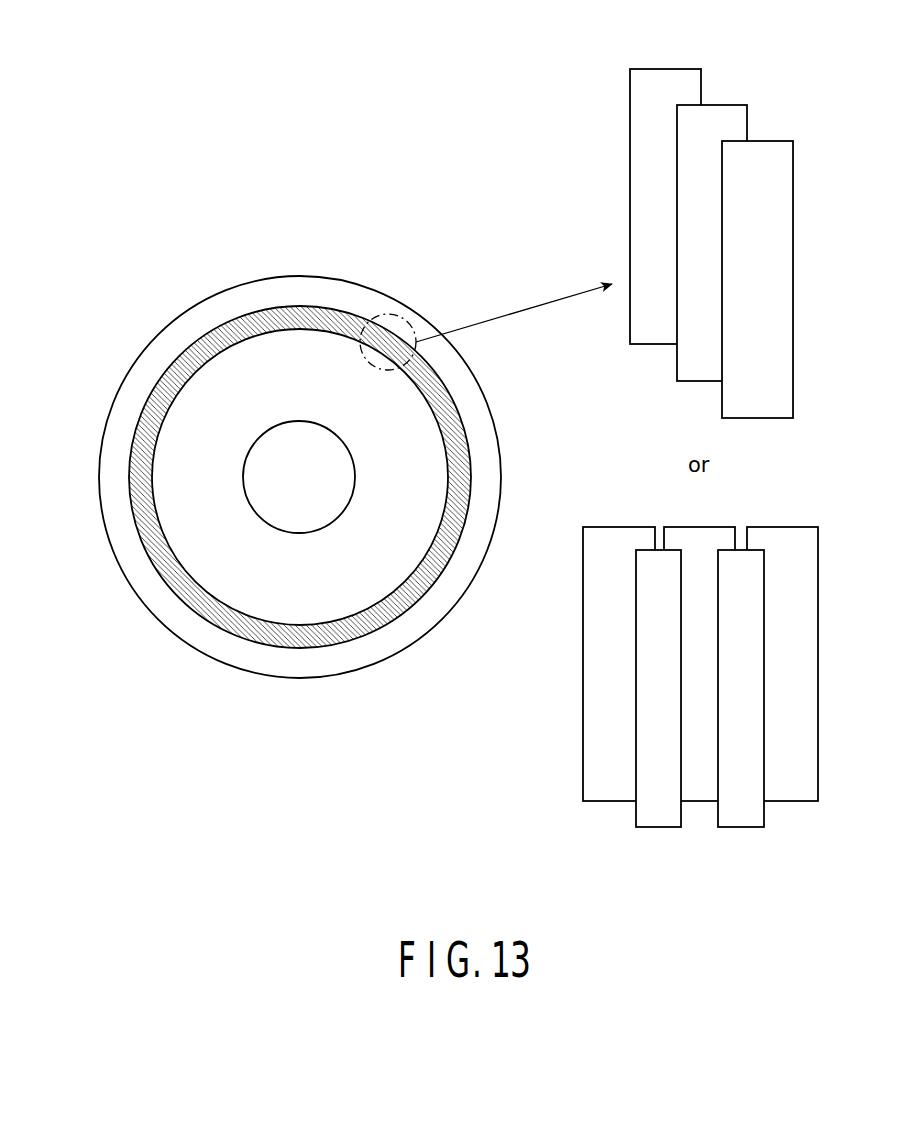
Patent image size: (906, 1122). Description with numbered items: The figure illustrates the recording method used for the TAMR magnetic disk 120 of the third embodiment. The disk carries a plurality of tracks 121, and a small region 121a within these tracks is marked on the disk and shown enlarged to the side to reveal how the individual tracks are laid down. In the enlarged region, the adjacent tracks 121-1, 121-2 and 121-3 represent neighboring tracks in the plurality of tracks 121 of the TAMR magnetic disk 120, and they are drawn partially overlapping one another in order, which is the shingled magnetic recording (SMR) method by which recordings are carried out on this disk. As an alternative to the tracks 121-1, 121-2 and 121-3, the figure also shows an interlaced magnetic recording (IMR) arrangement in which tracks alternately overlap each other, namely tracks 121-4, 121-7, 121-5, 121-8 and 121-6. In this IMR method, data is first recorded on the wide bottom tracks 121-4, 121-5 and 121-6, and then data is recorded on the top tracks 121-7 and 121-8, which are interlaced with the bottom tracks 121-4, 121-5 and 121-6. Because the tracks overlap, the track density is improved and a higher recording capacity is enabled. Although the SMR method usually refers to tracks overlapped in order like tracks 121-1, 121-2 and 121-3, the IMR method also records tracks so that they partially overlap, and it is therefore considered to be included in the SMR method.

The TAMR magnetic disk 120 is at (300, 256).
The plurality of tracks 121 is at (337, 308).
The region 121a is at (405, 318).
The track 121-1 is at (668, 68).
The track 121-2 is at (735, 104).
The track 121-3 is at (782, 140).
The bottom track 121-4 is at (603, 803).
The bottom track 121-5 is at (698, 803).
The bottom track 121-6 is at (797, 803).
The top track 121-7 is at (653, 829).
The top track 121-8 is at (747, 829).